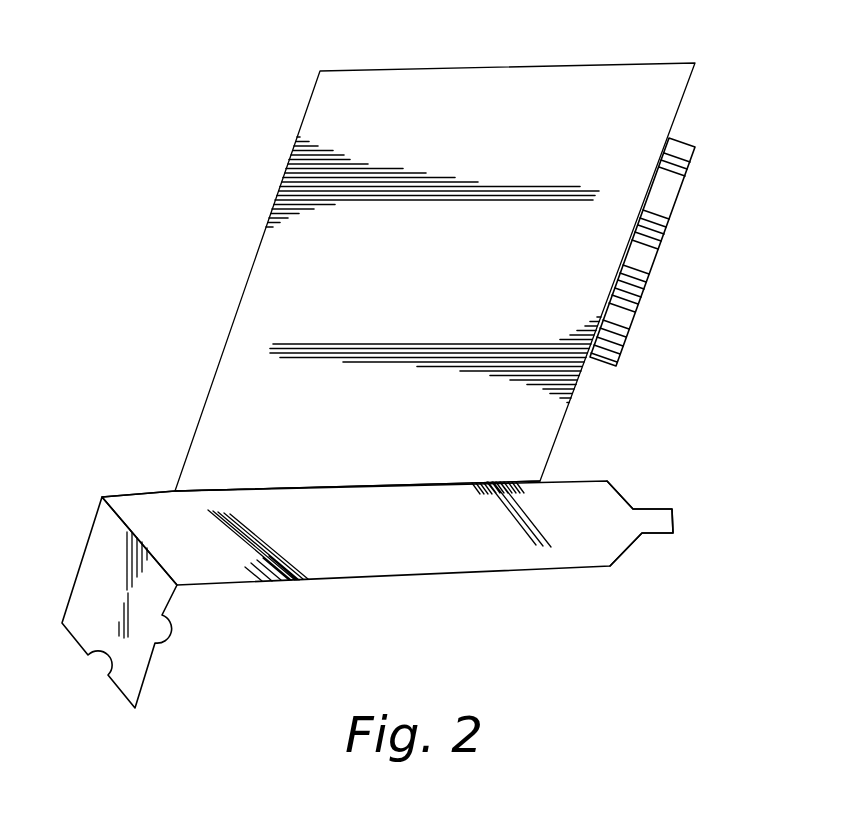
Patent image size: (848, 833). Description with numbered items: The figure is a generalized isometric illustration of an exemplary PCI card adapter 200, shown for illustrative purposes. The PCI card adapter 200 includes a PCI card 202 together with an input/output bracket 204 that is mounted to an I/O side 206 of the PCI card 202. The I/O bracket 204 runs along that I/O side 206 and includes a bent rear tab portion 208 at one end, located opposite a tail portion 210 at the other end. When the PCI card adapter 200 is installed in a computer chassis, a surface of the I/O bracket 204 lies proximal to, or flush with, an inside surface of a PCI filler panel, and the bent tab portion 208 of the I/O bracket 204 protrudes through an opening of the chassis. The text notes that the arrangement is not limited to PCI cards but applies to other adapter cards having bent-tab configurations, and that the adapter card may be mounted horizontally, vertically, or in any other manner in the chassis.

The PCI card adapter 200 is at (628, 646).
The PCI card 202 is at (482, 87).
The I/O bracket 204 is at (433, 550).
The I/O side 206 is at (172, 490).
The tab portion 208 is at (90, 565).
The tail portion 210 is at (662, 517).